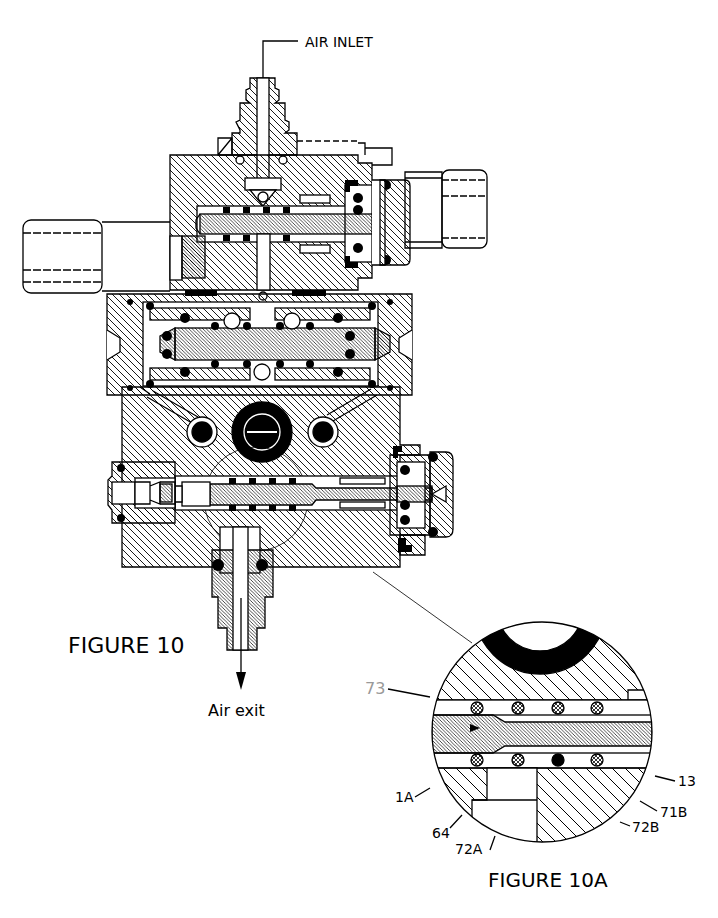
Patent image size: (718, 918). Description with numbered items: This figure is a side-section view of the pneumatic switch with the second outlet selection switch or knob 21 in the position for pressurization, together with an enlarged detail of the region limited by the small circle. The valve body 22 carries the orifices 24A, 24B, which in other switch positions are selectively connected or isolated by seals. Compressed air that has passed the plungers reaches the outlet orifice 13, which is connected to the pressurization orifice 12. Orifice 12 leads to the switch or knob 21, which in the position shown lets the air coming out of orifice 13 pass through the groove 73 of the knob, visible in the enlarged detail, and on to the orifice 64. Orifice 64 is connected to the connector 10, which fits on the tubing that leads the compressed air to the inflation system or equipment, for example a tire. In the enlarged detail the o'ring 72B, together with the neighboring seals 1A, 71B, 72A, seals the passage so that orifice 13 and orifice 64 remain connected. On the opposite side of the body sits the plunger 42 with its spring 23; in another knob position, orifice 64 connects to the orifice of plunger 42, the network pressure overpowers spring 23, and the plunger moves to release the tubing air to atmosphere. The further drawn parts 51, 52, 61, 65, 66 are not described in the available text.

In FIG. 10, the connector 10 is at (268, 588).
In FIG. 10, the pressurization orifice 12 is at (196, 508).
In FIG. 10, the outlet orifice 13 is at (314, 520).
In FIG. 10A, the outlet orifice 13 is at (632, 771).
In FIG. 10, the second outlet selection switch or knob 21 is at (455, 516).
In FIG. 10, the valve body 22 is at (345, 569).
In FIG. 10, the spring 23 is at (148, 506).
In FIG. 10, the orifice 24A is at (152, 401).
In FIG. 10, the orifice 24B is at (367, 407).
In FIG. 10, the plunger 42 is at (160, 483).
In FIG. 10, the retaining ring 51 is at (423, 551).
In FIG. 10, the spring cap 52 is at (440, 457).
In FIG. 10, the O-ring 61 is at (437, 537).
In FIG. 10, the orifice 64 is at (236, 514).
In FIG. 10A, the orifice 64 is at (507, 766).
In FIG. 10, the outlet bore 65 is at (251, 541).
In FIG. 10, the outlet passage 66 is at (262, 618).
In FIG. 10A, the groove 73 is at (480, 706).
In FIG. 10A, the seal 1A is at (478, 759).
In FIG. 10A, the seal 71B is at (622, 790).
In FIG. 10A, the seal 72A is at (517, 766).
In FIG. 10A, the o'ring 72B is at (600, 813).